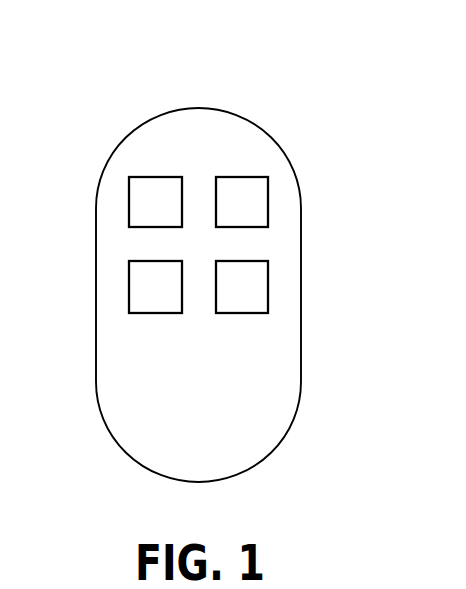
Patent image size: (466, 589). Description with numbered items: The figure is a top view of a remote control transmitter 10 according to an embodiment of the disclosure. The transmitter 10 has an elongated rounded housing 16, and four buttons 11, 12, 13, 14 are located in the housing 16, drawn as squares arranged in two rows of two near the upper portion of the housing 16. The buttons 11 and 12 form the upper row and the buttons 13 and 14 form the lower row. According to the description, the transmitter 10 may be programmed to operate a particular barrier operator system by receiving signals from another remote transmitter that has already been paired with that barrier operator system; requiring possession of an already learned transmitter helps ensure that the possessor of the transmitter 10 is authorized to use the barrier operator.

The transmitter 10 is at (272, 58).
The button 11 is at (148, 199).
The button 12 is at (251, 199).
The button 13 is at (148, 283).
The button 14 is at (251, 283).
The housing 16 is at (263, 397).